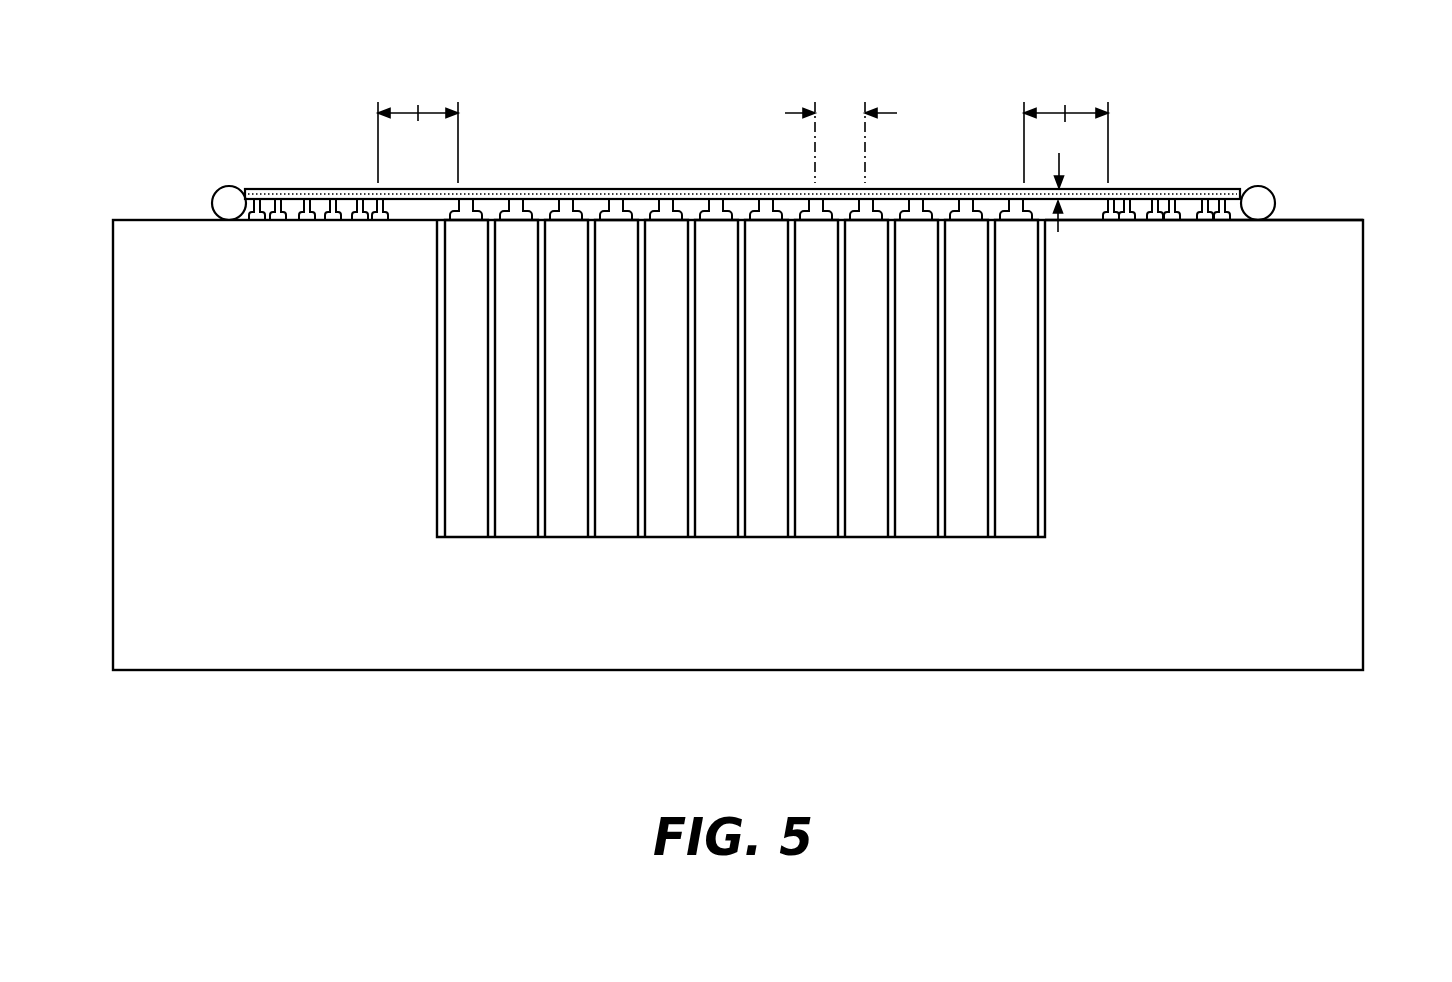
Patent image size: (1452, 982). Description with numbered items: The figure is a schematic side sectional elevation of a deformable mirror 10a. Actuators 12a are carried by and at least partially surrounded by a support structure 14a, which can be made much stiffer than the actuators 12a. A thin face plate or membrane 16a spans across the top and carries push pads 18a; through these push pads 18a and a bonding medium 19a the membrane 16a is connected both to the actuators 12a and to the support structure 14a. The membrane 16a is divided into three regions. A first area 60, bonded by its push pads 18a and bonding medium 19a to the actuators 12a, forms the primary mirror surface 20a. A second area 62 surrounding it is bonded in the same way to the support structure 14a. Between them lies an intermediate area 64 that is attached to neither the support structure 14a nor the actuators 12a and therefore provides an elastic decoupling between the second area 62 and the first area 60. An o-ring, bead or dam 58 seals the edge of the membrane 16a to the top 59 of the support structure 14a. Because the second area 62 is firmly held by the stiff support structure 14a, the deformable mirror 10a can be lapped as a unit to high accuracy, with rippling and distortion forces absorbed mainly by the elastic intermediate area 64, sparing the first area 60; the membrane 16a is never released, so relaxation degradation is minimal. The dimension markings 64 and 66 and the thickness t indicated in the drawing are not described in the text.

The deformable mirror 10a is at (942, 767).
The actuators 12a is at (917, 415).
The support structure 14a is at (1312, 528).
The face plate or membrane 16a is at (1202, 197).
The push pads 18a is at (547, 193).
The bonding medium 19a is at (307, 215).
The mirror surface 20a is at (704, 177).
The o-ring or bead or dam 58 is at (1260, 193).
The top of support structure 59 is at (1318, 220).
The first area 60 is at (938, 172).
The second area 62 is at (233, 46).
The intermediate area 64 is at (436, 91).
The pin width 66 is at (840, 102).
The plate thickness t is at (1067, 191).